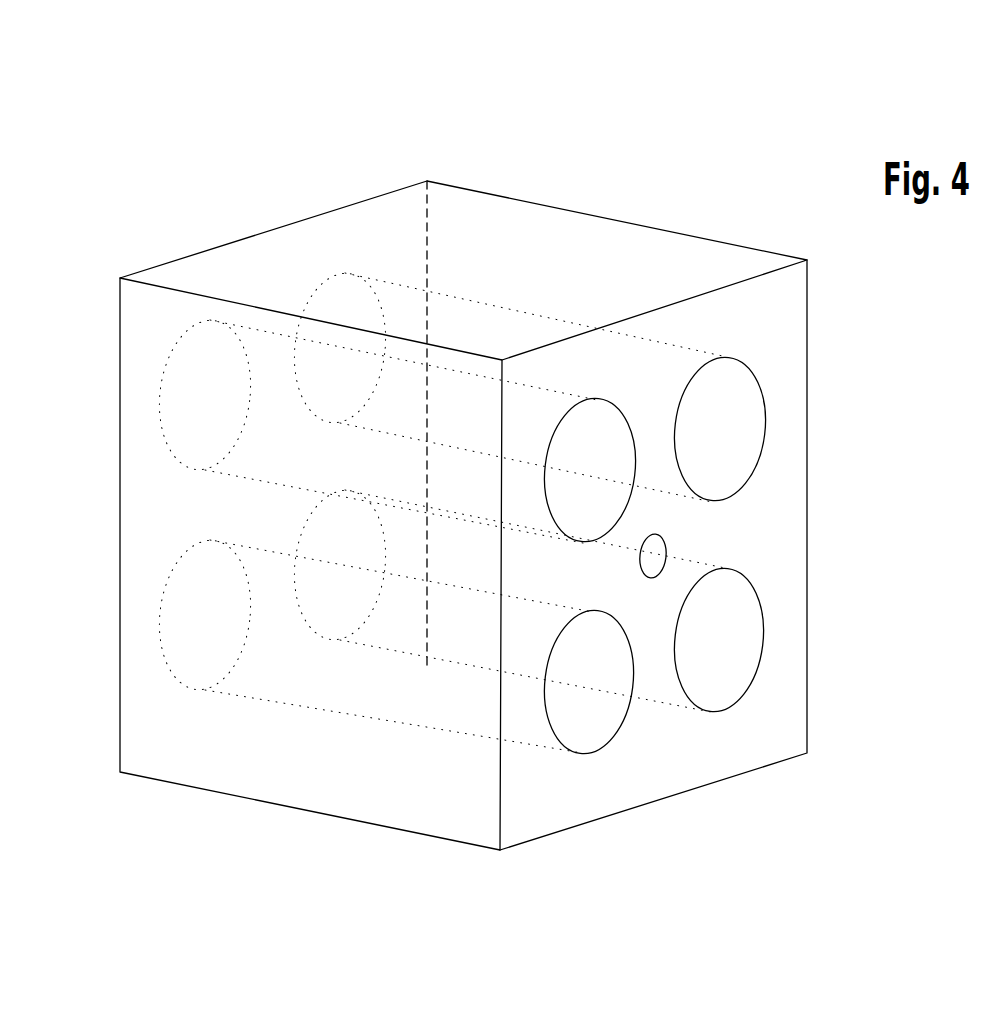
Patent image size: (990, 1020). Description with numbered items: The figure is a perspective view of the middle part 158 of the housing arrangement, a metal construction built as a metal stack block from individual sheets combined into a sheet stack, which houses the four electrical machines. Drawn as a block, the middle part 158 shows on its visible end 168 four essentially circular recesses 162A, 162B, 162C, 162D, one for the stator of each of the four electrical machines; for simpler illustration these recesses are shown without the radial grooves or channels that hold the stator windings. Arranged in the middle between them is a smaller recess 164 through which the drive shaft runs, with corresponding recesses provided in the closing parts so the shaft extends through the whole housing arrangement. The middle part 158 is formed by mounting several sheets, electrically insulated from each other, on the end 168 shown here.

The middle part 158 is at (588, 232).
The recess 162A is at (728, 417).
The recess 162B is at (595, 717).
The recess 162C is at (723, 672).
The recess 162D is at (588, 443).
The recess 164 is at (655, 553).
The end of the middle part 168 is at (768, 507).